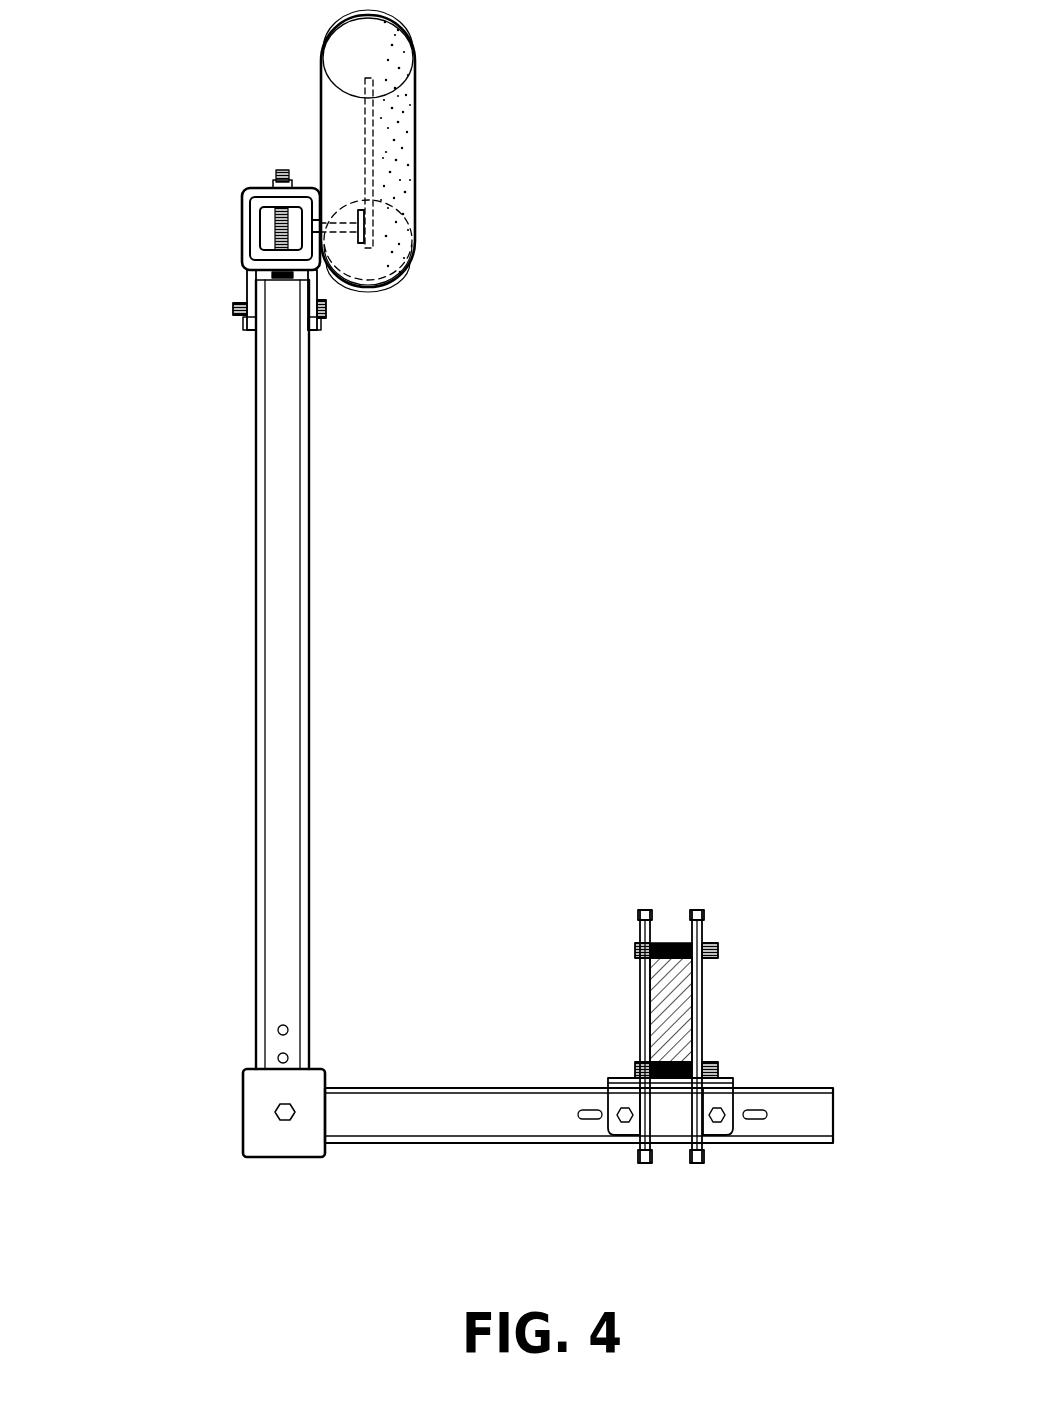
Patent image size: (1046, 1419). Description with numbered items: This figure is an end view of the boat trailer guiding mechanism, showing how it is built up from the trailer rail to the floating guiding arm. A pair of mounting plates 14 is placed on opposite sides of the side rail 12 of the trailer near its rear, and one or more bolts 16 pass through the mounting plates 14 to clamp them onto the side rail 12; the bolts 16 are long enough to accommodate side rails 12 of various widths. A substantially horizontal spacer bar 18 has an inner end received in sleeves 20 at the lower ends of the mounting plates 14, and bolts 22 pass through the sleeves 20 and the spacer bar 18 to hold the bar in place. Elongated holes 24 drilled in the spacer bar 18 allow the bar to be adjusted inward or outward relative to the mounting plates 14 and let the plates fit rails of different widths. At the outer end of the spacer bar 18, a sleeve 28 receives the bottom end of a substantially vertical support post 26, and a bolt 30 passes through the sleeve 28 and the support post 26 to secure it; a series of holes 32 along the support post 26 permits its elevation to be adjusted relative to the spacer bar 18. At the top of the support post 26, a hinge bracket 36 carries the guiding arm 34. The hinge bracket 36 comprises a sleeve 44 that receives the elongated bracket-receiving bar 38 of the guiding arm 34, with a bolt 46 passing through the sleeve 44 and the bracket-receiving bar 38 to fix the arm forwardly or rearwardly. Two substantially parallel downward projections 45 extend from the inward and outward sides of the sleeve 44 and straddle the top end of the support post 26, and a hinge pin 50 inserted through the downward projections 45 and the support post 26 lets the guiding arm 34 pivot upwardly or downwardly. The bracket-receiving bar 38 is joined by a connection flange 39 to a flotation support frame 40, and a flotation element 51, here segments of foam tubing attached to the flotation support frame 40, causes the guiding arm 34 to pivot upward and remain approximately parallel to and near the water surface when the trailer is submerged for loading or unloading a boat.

The side rail 12 is at (677, 987).
The mounting plates 14 is at (697, 910).
The bolts 16 is at (718, 950).
The spacer bar 18 is at (476, 1114).
The sleeves 20 is at (618, 1077).
The bolts 22 is at (625, 1123).
The elongated holes 24 is at (586, 1120).
The support post 26 is at (292, 538).
The sleeve 28 is at (288, 1158).
The bolt 30 is at (278, 1116).
The holes 32 is at (288, 1032).
The guiding arm 34 is at (430, 192).
The hinge bracket 36 is at (223, 257).
The bracket-receiving bar 38 is at (273, 185).
The connection flange 39 is at (400, 285).
The flotation support frame 40 is at (408, 92).
The sleeve 44 is at (240, 222).
The downward projections 45 is at (247, 285).
The bolt 46 is at (275, 180).
The hinge pin 50 is at (233, 307).
The flotation element 51 is at (400, 123).